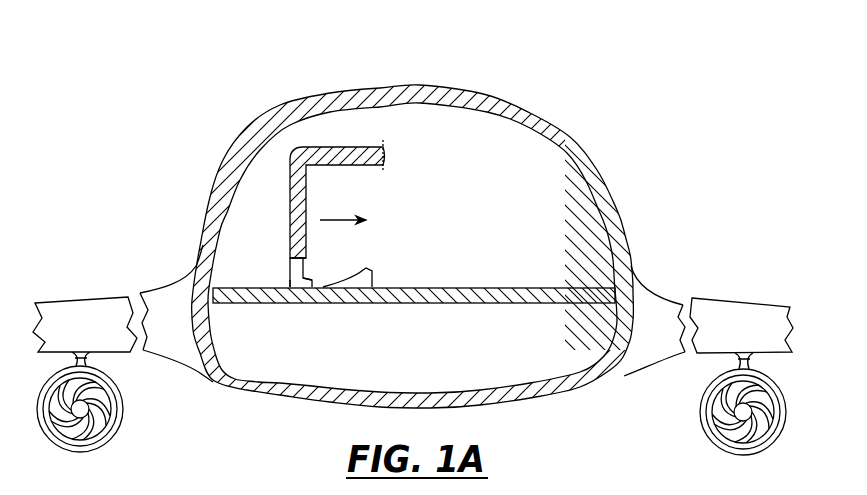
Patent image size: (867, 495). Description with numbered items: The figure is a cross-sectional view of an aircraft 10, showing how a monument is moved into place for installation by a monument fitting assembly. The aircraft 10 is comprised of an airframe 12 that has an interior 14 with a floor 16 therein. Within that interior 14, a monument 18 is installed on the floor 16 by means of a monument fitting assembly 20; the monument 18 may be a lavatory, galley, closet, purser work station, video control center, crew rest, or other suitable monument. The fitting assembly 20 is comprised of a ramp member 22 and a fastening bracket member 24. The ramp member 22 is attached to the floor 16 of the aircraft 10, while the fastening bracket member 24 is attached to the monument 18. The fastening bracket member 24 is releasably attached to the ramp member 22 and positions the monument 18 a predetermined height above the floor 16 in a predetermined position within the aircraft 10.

The aircraft 10 is at (128, 100).
The airframe 12 is at (268, 117).
The interior 14 is at (504, 171).
The floor 16 is at (520, 287).
The monument 18 is at (357, 148).
The monument fitting assembly 20 is at (282, 265).
The ramp member 22 is at (367, 270).
The fastening bracket member 24 is at (290, 282).